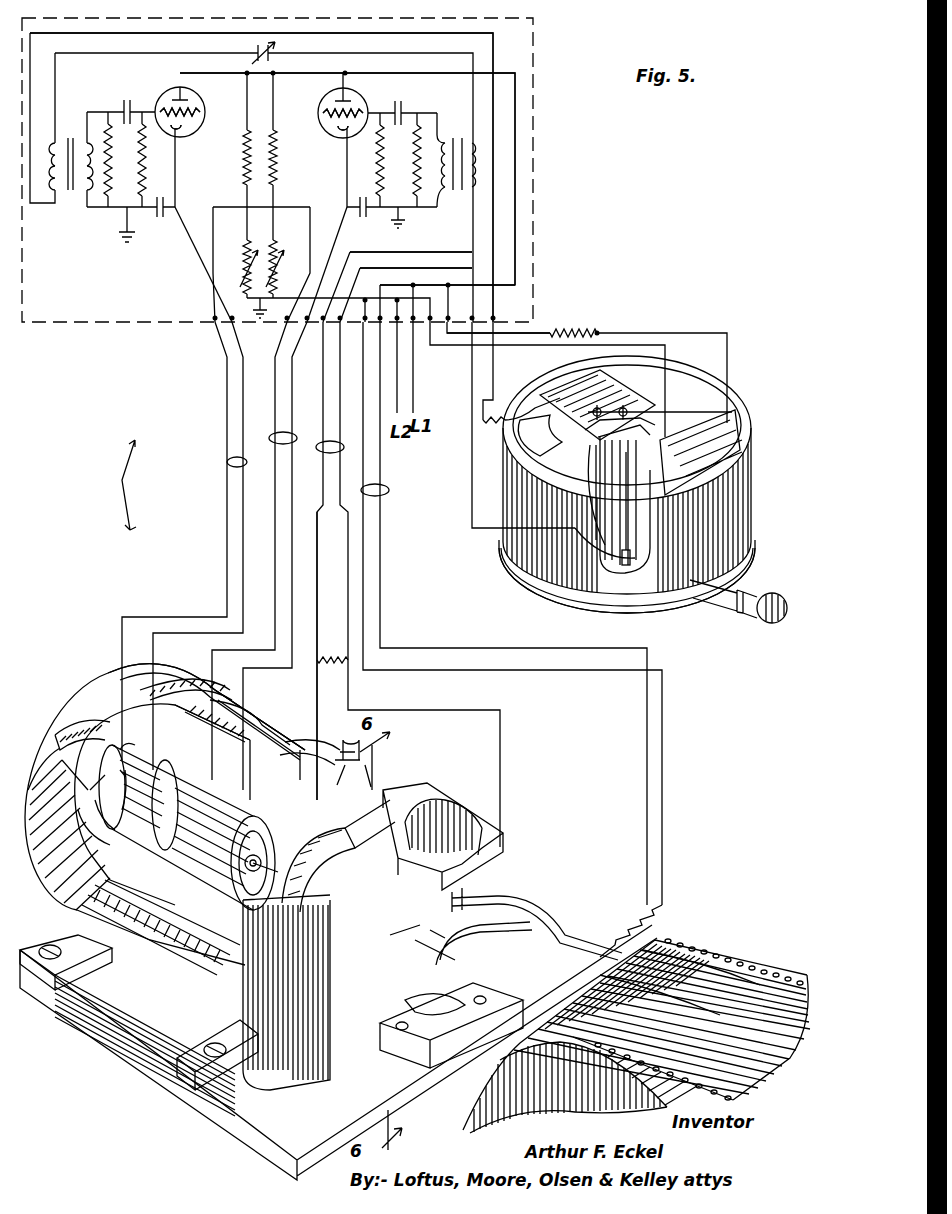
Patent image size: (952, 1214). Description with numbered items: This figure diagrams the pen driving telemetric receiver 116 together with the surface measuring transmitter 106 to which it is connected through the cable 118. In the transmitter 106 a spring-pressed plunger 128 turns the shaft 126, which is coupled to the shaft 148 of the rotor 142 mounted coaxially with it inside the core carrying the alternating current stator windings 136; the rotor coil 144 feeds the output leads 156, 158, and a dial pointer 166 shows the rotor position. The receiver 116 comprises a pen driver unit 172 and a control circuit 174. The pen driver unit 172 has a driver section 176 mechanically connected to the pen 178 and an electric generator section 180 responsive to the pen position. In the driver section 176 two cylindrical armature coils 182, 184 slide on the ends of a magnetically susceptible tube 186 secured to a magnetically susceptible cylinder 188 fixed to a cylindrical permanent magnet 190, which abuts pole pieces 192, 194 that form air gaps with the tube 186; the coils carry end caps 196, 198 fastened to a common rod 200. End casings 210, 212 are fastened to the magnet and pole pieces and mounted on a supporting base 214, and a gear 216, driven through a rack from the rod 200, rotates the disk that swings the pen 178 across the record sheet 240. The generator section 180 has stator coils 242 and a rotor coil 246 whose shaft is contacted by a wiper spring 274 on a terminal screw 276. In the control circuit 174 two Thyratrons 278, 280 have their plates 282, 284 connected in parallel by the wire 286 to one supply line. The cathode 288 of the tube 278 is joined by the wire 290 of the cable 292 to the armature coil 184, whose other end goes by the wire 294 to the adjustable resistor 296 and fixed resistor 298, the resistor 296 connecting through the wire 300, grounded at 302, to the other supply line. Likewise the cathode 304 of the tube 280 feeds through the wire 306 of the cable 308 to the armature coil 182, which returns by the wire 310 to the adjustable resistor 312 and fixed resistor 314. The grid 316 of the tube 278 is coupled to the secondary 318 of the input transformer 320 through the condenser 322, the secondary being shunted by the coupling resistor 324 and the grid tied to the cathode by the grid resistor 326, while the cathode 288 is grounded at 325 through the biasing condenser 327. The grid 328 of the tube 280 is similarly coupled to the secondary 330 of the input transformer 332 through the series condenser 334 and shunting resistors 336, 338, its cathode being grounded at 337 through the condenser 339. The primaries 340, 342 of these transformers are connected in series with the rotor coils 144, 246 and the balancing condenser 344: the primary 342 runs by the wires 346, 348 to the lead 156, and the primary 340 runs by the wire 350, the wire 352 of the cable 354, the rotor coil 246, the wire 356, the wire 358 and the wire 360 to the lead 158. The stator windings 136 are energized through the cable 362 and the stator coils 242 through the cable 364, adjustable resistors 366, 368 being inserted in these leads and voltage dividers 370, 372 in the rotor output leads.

The surface measuring transmitter 106 is at (752, 398).
The pen driving telemetric receiver 116 is at (94, 485).
The cable 118 is at (474, 392).
The shaft 126 is at (618, 582).
The plunger 128 is at (768, 625).
The alternating current stator windings 136 is at (650, 385).
The rotor 142 is at (632, 499).
The rotor coil 144 is at (598, 506).
The shaft 148 is at (622, 555).
The output lead 156 is at (480, 456).
The output lead 158 is at (605, 547).
The dial pointer 166 is at (733, 400).
The pen driver unit 172 is at (121, 1079).
The control unit or circuit 174 is at (112, 330).
The driver section 176 is at (108, 667).
The pen 178 is at (688, 942).
The electric generator section 180 is at (503, 834).
The armature coil 182 is at (82, 814).
The armature coil 184 is at (212, 812).
The tube 186 is at (174, 815).
The magnetically susceptible cylinder 188 is at (232, 722).
The permanent magnet 190 is at (260, 722).
The pole piece 192 is at (232, 693).
The pole piece 194 is at (290, 742).
The end cap 196 is at (88, 790).
The end cap 198 is at (161, 927).
The common shaft or rod 200 is at (122, 770).
The end casing 210 is at (350, 752).
The end casing 212 is at (95, 684).
The supporting base 214 is at (72, 1023).
The gear 216 is at (451, 1025).
The record sheet 240 is at (740, 948).
The stator coils 242 is at (505, 880).
The rotor coil 246 is at (338, 856).
The wiper spring 274 is at (443, 827).
The terminal screw 276 is at (434, 936).
The Thyratron 278 is at (326, 130).
The Thyratron 280 is at (180, 130).
The anode or plate 282 is at (352, 104).
The anode or plate 284 is at (173, 87).
The wire 286 is at (515, 118).
The cathode 288 is at (338, 135).
The wire 290 is at (338, 232).
The cable 292 is at (287, 556).
The wire 294 is at (272, 383).
The adjustable resistor 296 is at (276, 252).
The fixed resistor 298 is at (282, 136).
The wire 300 is at (282, 293).
The ground 302 is at (232, 321).
The cathode 304 is at (176, 160).
The wire 306 is at (190, 242).
The cable 308 is at (227, 463).
The wire 310 is at (243, 537).
The adjustable resistor 312 is at (243, 252).
The fixed resistor 314 is at (243, 150).
The grid 316 is at (396, 112).
The secondary 318 is at (438, 128).
The input transformer 320 is at (457, 140).
The condenser 322 is at (405, 112).
The coupling resistor 324 is at (403, 208).
The ground 325 is at (400, 245).
The grid resistor 326 is at (376, 150).
The condenser 327 is at (363, 205).
The grid 328 is at (195, 106).
The secondary 330 is at (106, 100).
The input transformer 332 is at (82, 125).
The series condenser 334 is at (137, 100).
The shunting resistor 336 is at (82, 195).
The ground 337 is at (114, 250).
The shunting resistor 338 is at (157, 216).
The condenser 339 is at (146, 185).
The primary winding 340 is at (480, 165).
The primary winding 342 is at (70, 193).
The phasing or balancing condenser 344 is at (258, 50).
The wire 346 is at (493, 50).
The wire 348 is at (472, 357).
The wire 350 is at (447, 266).
The wire 352 is at (314, 561).
The cable 354 is at (320, 620).
The wire 356 is at (340, 370).
The wire 358 is at (372, 250).
The wire 360 is at (478, 372).
The cable 362 is at (525, 345).
The cable 364 is at (511, 613).
The adjustable resistor 366 is at (578, 328).
The adjustable resistor 368 is at (632, 918).
The voltage divider 370 is at (482, 424).
The voltage divider 372 is at (334, 675).